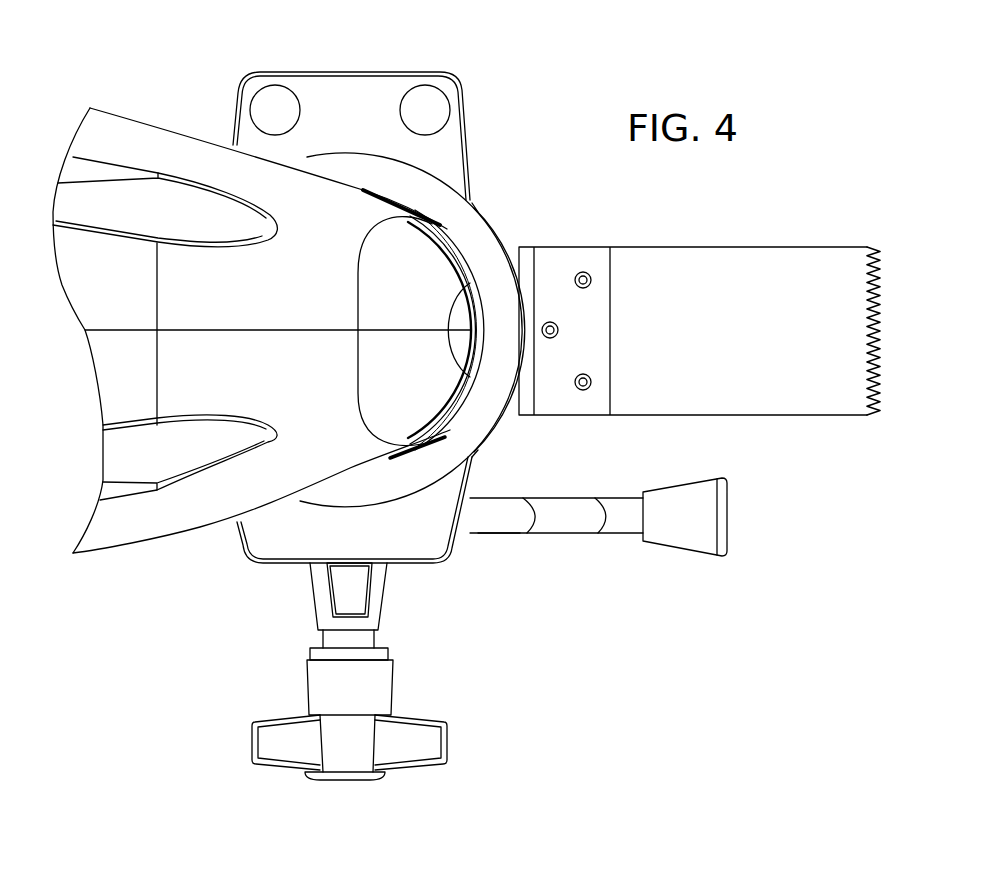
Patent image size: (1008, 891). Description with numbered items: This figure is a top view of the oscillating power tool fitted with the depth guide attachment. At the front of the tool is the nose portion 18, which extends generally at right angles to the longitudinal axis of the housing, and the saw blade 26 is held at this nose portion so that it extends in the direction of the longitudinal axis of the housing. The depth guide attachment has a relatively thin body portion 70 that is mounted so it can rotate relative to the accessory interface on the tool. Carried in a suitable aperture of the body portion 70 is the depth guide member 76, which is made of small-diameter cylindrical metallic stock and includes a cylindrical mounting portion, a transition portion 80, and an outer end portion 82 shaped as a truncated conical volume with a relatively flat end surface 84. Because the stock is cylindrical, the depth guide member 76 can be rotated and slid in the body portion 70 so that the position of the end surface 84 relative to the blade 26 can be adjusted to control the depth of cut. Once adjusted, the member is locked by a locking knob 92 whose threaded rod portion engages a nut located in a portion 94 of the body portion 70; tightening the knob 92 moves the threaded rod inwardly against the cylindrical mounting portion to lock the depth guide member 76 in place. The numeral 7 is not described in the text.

The nose portion 18 is at (152, 119).
The body portion 70 is at (345, 110).
The saw blade 26 is at (565, 258).
The locking rod 7 is at (556, 527).
The depth guide member 76 is at (512, 536).
The transition portion 80 is at (569, 517).
The outer end portion 82 is at (721, 535).
The end surface 84 is at (727, 488).
The locking knob 92 is at (284, 743).
The portion of the body 94 is at (348, 590).